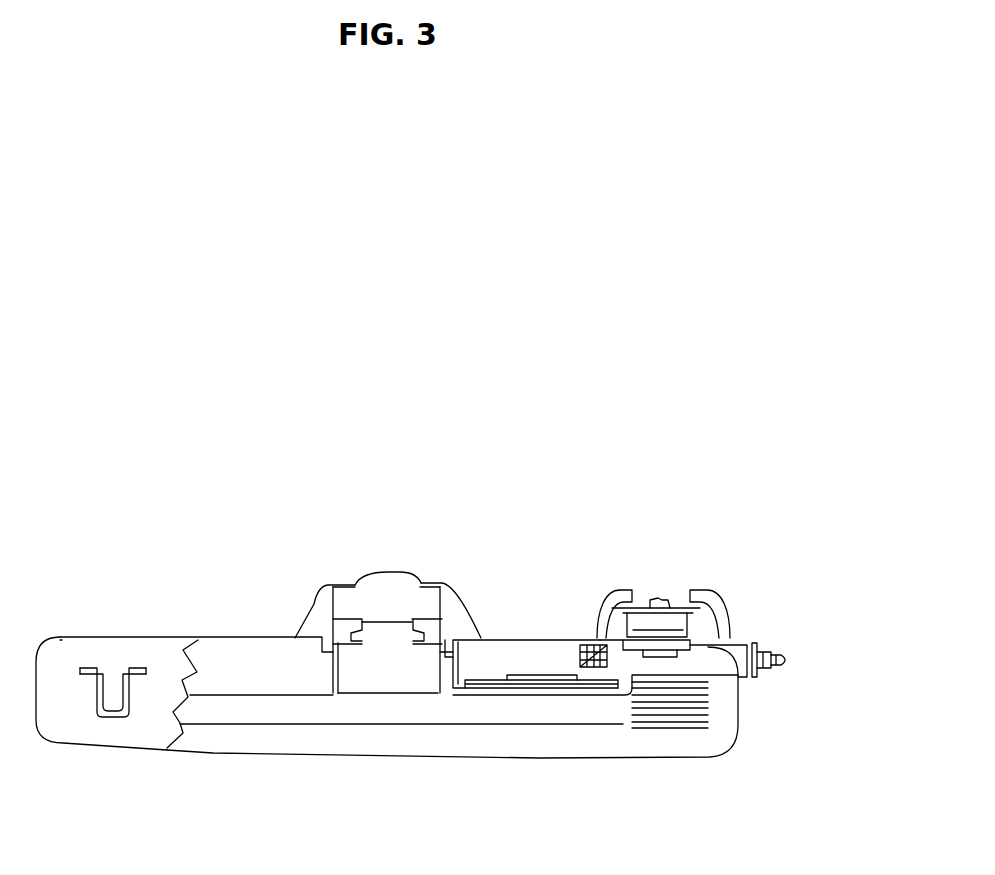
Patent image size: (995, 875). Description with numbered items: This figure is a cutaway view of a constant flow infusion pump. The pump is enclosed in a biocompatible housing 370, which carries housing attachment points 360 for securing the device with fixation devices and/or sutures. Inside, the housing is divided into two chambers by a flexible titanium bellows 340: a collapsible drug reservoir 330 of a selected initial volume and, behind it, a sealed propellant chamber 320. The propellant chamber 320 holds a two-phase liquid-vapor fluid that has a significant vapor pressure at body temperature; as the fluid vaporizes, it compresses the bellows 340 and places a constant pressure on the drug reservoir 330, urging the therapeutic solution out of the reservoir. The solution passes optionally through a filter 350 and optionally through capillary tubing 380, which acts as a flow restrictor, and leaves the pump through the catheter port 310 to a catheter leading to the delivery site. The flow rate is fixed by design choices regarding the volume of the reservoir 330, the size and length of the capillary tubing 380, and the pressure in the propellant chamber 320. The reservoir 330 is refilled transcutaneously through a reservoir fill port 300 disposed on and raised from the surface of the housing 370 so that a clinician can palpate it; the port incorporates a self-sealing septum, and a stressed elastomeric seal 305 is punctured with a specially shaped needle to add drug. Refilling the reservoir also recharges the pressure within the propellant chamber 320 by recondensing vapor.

The reservoir fill port 300 is at (447, 598).
The stressed elastomeric seal 305 is at (383, 603).
The catheter port 310 is at (790, 660).
The propellant chamber 320 is at (450, 742).
The drug reservoir 330 is at (552, 716).
The bellows 340 is at (257, 722).
The filter 350 is at (540, 680).
The housing attachment points 360 is at (113, 716).
The housing 370 is at (113, 655).
The capillary tubing 380 is at (605, 640).